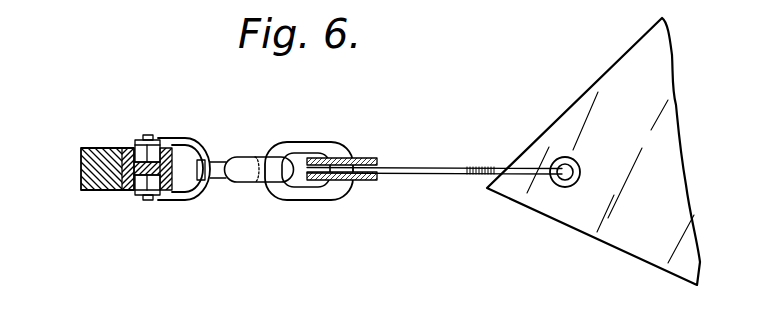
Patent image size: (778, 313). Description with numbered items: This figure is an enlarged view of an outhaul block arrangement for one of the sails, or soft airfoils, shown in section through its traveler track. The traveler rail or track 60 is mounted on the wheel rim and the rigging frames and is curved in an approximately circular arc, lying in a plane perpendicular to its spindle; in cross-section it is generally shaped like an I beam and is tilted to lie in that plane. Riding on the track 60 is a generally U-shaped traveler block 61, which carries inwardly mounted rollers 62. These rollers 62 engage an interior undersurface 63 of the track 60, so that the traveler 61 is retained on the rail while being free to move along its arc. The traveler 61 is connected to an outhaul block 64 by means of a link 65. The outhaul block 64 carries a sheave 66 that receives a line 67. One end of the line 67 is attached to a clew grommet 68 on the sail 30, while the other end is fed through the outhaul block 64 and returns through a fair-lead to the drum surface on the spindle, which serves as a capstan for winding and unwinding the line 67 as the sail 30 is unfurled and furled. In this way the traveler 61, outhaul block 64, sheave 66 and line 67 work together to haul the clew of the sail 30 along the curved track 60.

The sail 30 is at (632, 78).
The traveler rail or track 60 is at (132, 148).
The traveler block 61 is at (203, 145).
The rollers 62 is at (140, 138).
The interior undersurface 63 is at (150, 150).
The outhaul block 64 is at (298, 143).
The link 65 is at (252, 176).
The sheave 66 is at (368, 157).
The line 67 is at (417, 175).
The clew grommet 68 is at (574, 158).